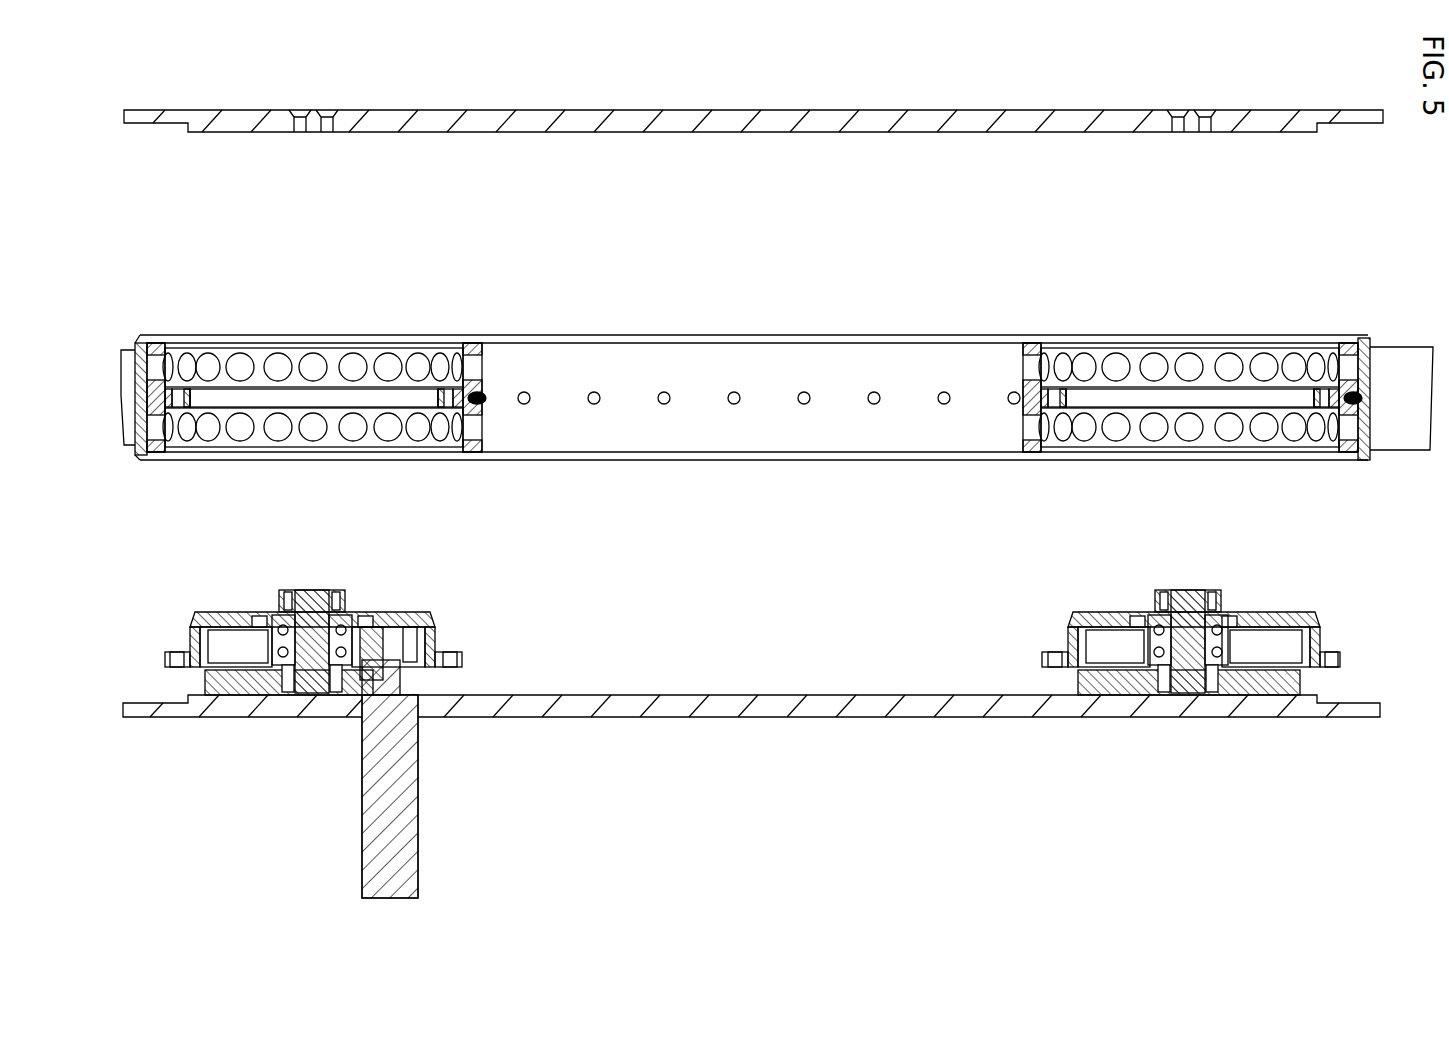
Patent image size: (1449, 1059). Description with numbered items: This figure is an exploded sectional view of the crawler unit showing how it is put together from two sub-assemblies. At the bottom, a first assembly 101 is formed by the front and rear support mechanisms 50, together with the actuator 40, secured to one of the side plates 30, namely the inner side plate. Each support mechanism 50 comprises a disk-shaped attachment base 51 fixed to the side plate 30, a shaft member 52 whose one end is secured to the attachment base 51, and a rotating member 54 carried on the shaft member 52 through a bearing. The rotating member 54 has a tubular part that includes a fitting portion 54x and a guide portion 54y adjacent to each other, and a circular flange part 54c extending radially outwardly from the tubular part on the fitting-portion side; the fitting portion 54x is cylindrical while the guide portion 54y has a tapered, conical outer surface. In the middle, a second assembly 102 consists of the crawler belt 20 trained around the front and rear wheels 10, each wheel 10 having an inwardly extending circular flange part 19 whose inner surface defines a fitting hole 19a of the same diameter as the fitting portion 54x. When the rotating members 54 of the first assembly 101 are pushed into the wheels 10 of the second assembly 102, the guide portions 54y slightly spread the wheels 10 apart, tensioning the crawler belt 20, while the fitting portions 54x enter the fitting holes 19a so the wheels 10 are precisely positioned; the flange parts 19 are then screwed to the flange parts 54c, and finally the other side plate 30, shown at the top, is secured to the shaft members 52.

The wheel 10 is at (333, 352).
The flange part 19 is at (188, 408).
The fitting hole 19a is at (190, 397).
The crawler belt 20 is at (1370, 373).
The side plate 30 is at (988, 110).
The actuator 40 is at (418, 865).
The support mechanism 50 is at (393, 612).
The attachment base 51 is at (235, 697).
The shaft member 52 is at (340, 590).
The rotating member 54 is at (752, 611).
The flange part 54c is at (462, 660).
The fitting portion 54x is at (435, 637).
The guide portion 54y is at (435, 612).
The first assembly 101 is at (1340, 622).
The second assembly 102 is at (1333, 325).